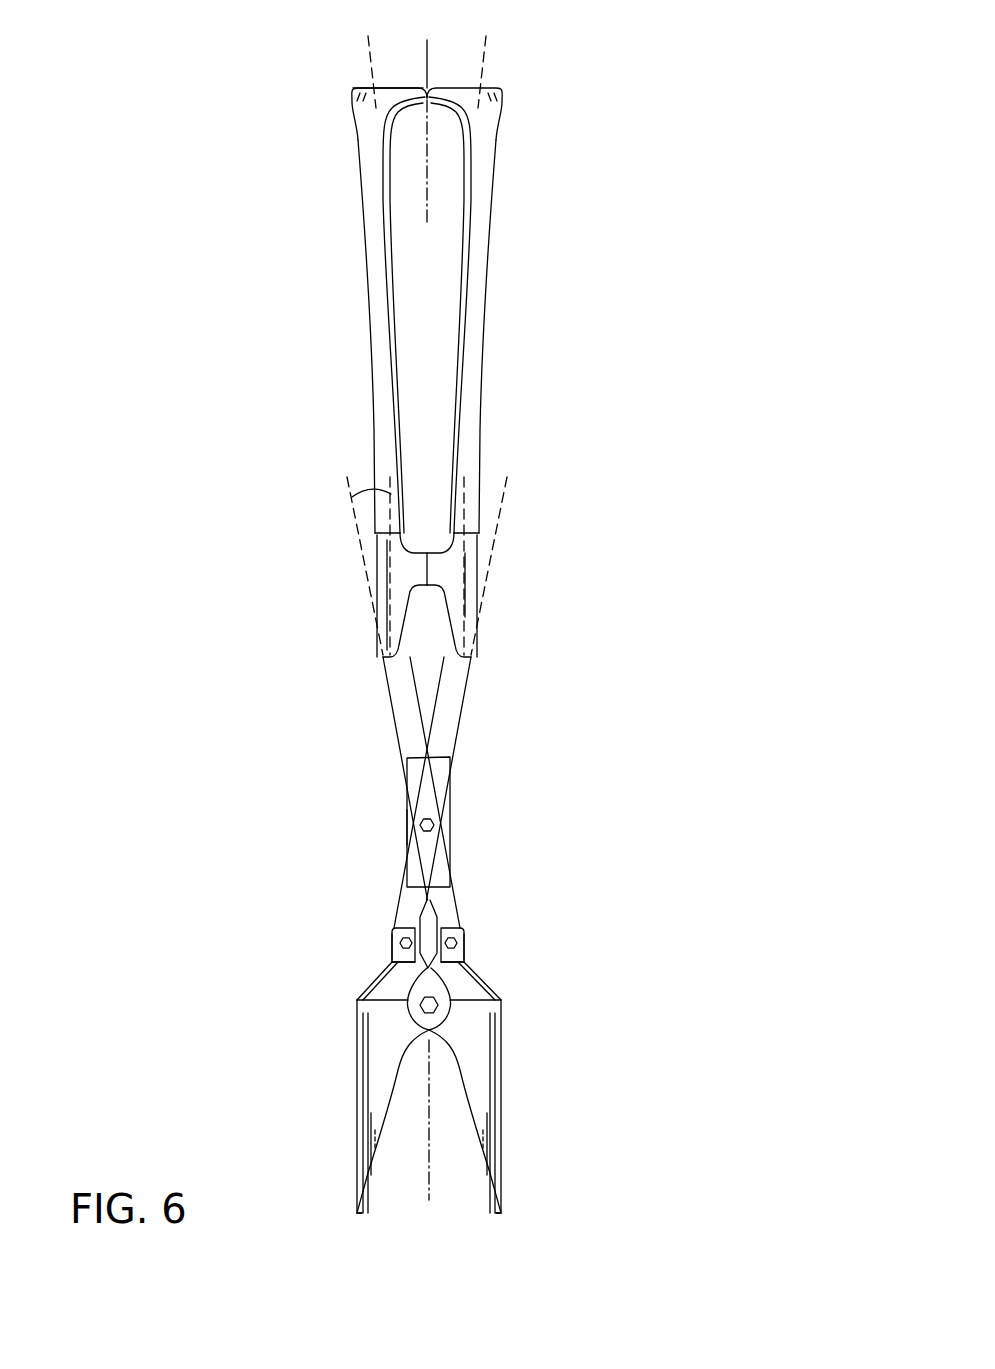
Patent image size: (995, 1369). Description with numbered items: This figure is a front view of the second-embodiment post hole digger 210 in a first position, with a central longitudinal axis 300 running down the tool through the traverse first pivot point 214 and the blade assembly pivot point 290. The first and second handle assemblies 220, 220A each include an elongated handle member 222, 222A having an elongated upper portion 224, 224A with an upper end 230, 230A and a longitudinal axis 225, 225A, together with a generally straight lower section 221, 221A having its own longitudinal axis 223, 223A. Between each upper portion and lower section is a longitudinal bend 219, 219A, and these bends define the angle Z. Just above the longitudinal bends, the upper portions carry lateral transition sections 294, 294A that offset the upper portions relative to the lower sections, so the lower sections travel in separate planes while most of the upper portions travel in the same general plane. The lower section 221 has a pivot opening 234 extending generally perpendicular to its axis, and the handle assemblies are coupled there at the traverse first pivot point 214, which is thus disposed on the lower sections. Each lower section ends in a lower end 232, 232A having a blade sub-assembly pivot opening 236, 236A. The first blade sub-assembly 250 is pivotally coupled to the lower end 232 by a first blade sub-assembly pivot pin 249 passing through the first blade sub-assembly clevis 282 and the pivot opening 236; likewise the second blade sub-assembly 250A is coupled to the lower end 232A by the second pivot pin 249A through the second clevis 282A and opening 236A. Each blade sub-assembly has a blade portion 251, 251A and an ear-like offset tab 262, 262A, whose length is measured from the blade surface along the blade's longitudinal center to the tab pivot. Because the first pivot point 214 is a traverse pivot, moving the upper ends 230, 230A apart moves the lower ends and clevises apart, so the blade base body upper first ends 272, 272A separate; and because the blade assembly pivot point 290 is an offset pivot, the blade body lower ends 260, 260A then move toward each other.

The post hole digger 210 is at (199, 86).
The central longitudinal axis 300 is at (430, 62).
The longitudinal axis 225 is at (372, 62).
The longitudinal axis 225A is at (482, 62).
The upper end 230 is at (356, 108).
The upper end 230A is at (498, 108).
The first handle assembly 220 is at (314, 286).
The second handle assembly 220A is at (539, 283).
The upper portion 224 is at (372, 366).
The upper portion 224A is at (484, 364).
The handle member 222 is at (374, 437).
The handle member 222A is at (470, 432).
The angle Z is at (378, 492).
The longitudinal axis 223 is at (356, 526).
The longitudinal axis 223A is at (498, 526).
The longitudinal bend 219 is at (384, 660).
The longitudinal bend 219A is at (471, 660).
The lateral transition section 294 is at (337, 724).
The lateral transition section 294A is at (518, 725).
The first pivot point 214 is at (625, 770).
The pivot opening 234 is at (418, 822).
The lower section 221 is at (448, 843).
The lower section 221A is at (408, 843).
The second blade sub-assembly clevis 282A is at (362, 866).
The first blade sub-assembly clevis 282 is at (497, 865).
The lower end 232A is at (411, 925).
The lower end 232 is at (455, 925).
The second blade sub-assembly pivot pin 249A is at (400, 935).
The first blade sub-assembly pivot pin 249 is at (462, 935).
The blade base body upper first end 272A is at (393, 950).
The blade base body upper first end 272 is at (466, 950).
The second blade sub-assembly pivot opening 236A is at (415, 962).
The first blade sub-assembly pivot opening 236 is at (445, 962).
The blade sub-assembly offset tab 262A is at (410, 1027).
The blade sub-assembly offset tab 262 is at (450, 1027).
The blade assembly pivot point 290 is at (420, 1043).
The first blade sub-assembly 250 is at (490, 1090).
The second blade sub-assembly 250A is at (368, 1090).
The blade portion 251 is at (490, 1118).
The blade portion 251A is at (368, 1118).
The blade body lower end 260 is at (498, 1213).
The blade body lower end 260A is at (360, 1213).